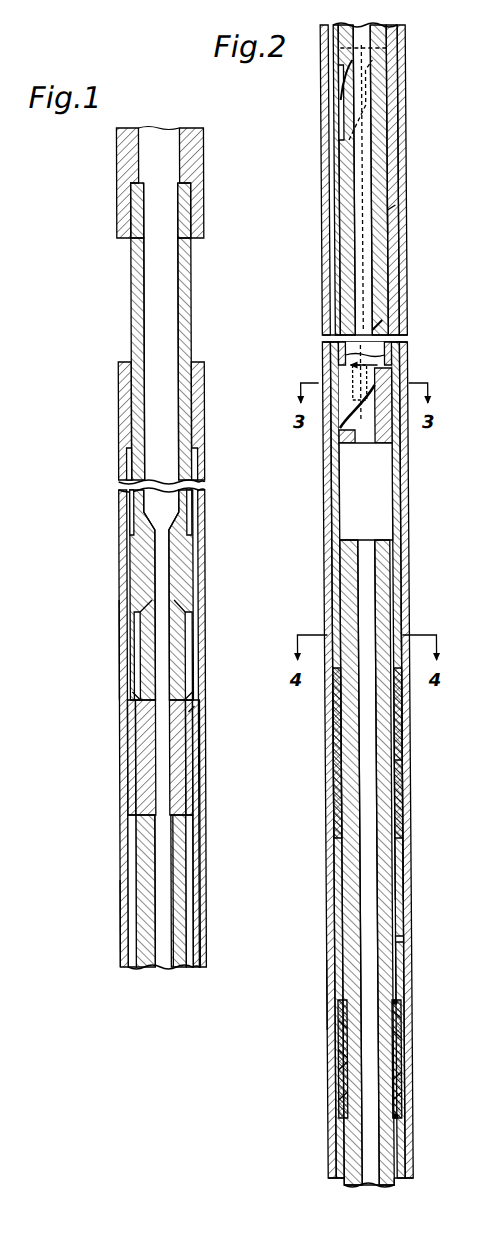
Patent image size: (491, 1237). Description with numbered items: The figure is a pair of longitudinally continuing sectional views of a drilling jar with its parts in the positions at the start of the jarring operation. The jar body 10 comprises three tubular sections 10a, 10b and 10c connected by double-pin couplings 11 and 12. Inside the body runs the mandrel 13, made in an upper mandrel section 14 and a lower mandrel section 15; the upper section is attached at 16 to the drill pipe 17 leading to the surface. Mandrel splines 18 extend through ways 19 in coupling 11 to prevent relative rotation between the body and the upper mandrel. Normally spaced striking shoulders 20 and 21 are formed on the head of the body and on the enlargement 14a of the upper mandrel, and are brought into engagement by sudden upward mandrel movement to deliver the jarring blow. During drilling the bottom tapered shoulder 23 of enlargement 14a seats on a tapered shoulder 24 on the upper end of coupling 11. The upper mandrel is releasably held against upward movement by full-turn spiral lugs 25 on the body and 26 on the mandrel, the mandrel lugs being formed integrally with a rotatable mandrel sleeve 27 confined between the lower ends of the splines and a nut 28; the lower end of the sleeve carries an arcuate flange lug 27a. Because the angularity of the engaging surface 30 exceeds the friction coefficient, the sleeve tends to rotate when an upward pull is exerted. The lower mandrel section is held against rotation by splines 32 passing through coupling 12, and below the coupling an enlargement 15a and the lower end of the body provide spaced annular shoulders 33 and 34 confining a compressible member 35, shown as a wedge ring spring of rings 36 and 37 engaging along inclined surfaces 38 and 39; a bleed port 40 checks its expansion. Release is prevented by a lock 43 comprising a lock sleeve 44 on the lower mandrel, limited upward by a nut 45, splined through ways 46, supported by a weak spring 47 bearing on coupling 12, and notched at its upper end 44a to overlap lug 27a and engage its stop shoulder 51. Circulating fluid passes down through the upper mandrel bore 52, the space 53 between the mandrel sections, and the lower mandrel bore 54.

In FIG. 1, the jar body 10 is at (202, 605).
In FIG. 2, the jar body 10 is at (404, 606).
In FIG. 1, the upper tubular section of jar body 10a is at (119, 655).
In FIG. 1, the intermediate tubular section of jar body 10b is at (119, 940).
In FIG. 2, the intermediate tubular section of jar body 10b is at (320, 303).
In FIG. 2, the lower tubular section of jar body 10c is at (326, 990).
In FIG. 1, the double-pin coupling 11 is at (190, 761).
In FIG. 2, the double-pin coupling 12 is at (332, 893).
In FIG. 1, the mandrel 13 is at (192, 344).
In FIG. 2, the mandrel 13 is at (391, 1151).
In FIG. 1, the upper mandrel section 14 is at (178, 519).
In FIG. 2, the upper mandrel section 14 is at (373, 141).
In FIG. 1, the mandrel enlargement 14a is at (184, 581).
In FIG. 2, the lower mandrel section 15 is at (385, 827).
In FIG. 2, the mandrel enlargement 15a is at (401, 968).
In FIG. 1, the attachment of mandrel to drill pipe 16 is at (187, 211).
In FIG. 1, the drill pipe 17 is at (198, 161).
In FIG. 1, the mandrel splines 18 is at (181, 671).
In FIG. 2, the mandrel splines 18 is at (388, 38).
In FIG. 1, the ways 19 is at (188, 718).
In FIG. 1, the striking shoulder 20 is at (127, 455).
In FIG. 1, the striking shoulder 21 is at (129, 535).
In FIG. 1, the bottom tapered shoulder 23 is at (186, 626).
In FIG. 1, the tapered shoulder 24 is at (193, 691).
In FIG. 2, the body lug 25 is at (333, 139).
In FIG. 2, the mandrel lug 26 is at (333, 183).
In FIG. 2, the mandrel sleeve 27 is at (390, 321).
In FIG. 2, the flange lug 27a is at (386, 381).
In FIG. 2, the nut 28 is at (388, 441).
In FIG. 2, the engaging surface 30 is at (330, 166).
In FIG. 2, the splines 32 is at (394, 763).
In FIG. 2, the annular shoulder 33 is at (396, 1002).
In FIG. 2, the annular shoulder 34 is at (396, 1117).
In FIG. 2, the compressible member 35 is at (400, 1058).
In FIG. 2, the wedge rings 36 is at (394, 1018).
In FIG. 2, the wedge rings 37 is at (392, 1036).
In FIG. 2, the annular inclined surface 38 is at (338, 1026).
In FIG. 2, the annular inclined surface 39 is at (338, 1052).
In FIG. 2, the bleed port 40 is at (398, 940).
In FIG. 2, the lock 43 is at (344, 410).
In FIG. 2, the lock sleeve 44 is at (325, 506).
In FIG. 2, the upper end of lock sleeve 44a is at (336, 371).
In FIG. 2, the nut 45 is at (388, 566).
In FIG. 2, the ways 46 is at (400, 626).
In FIG. 2, the spring 47 is at (397, 720).
In FIG. 2, the shoulder 51 is at (394, 213).
In FIG. 1, the upper mandrel bore 52 is at (161, 314).
In FIG. 2, the upper mandrel bore 52 is at (366, 116).
In FIG. 2, the space 53 is at (378, 500).
In FIG. 2, the bore 54 is at (370, 895).